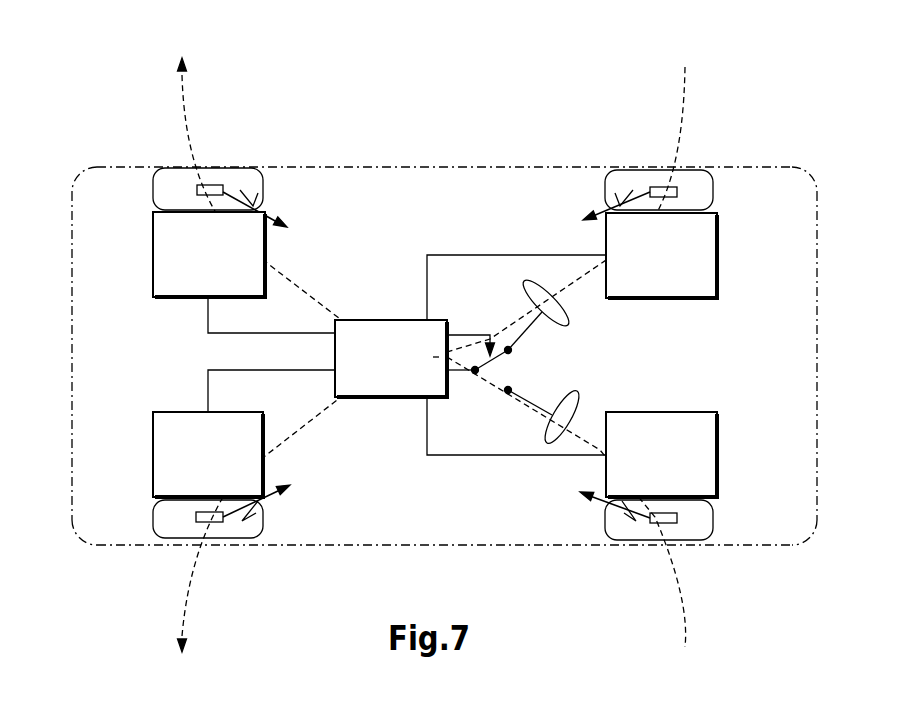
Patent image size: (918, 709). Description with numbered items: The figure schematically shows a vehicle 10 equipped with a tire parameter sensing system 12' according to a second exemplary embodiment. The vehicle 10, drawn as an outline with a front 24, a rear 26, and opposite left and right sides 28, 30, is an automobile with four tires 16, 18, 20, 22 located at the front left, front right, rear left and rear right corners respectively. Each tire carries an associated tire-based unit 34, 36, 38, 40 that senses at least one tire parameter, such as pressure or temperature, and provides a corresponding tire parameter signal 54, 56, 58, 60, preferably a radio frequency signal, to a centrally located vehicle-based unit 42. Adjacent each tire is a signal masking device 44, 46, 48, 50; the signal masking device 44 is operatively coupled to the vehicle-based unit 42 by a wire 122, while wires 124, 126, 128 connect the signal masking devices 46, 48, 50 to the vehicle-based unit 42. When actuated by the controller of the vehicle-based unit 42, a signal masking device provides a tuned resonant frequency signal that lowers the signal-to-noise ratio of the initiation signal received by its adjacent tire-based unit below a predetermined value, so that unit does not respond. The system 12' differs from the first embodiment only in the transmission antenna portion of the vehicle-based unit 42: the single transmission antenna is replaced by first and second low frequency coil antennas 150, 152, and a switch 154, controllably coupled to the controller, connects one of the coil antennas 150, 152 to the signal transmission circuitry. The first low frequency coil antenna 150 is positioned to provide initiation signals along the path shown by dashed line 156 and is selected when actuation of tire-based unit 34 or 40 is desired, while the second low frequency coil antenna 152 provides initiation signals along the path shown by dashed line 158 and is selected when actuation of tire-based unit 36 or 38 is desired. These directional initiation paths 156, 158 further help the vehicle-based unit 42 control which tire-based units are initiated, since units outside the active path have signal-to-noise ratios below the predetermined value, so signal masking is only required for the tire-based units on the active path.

The vehicle 10 is at (442, 359).
The tire parameter sensing system 12' is at (502, 80).
The tire 16 is at (170, 527).
The tire 18 is at (177, 182).
The tire 20 is at (697, 528).
The tire 22 is at (702, 182).
The front 24 is at (72, 350).
The rear 26 is at (817, 333).
The left side 28 is at (312, 545).
The right side 30 is at (400, 167).
The tire-based unit 34 is at (212, 523).
The tire-based unit 36 is at (207, 187).
The tire-based unit 38 is at (650, 523).
The tire-based unit 40 is at (665, 190).
The vehicle-based unit 42 is at (343, 318).
The signal masking device 44 is at (160, 430).
The signal masking device 46 is at (163, 282).
The signal masking device 48 is at (705, 430).
The signal masking device 50 is at (705, 278).
The tire parameter signal 54 is at (273, 513).
The tire parameter signal 56 is at (277, 208).
The tire parameter signal 58 is at (597, 503).
The tire parameter signal 60 is at (600, 203).
The wire 122 is at (283, 372).
The wire 124 is at (284, 332).
The wire 126 is at (447, 456).
The wire 128 is at (448, 253).
The first low frequency coil antenna 150 is at (523, 293).
The second low frequency coil antenna 152 is at (572, 397).
The switch 154 is at (491, 375).
The dashed line 156 is at (690, 100).
The dashed line 158 is at (185, 100).